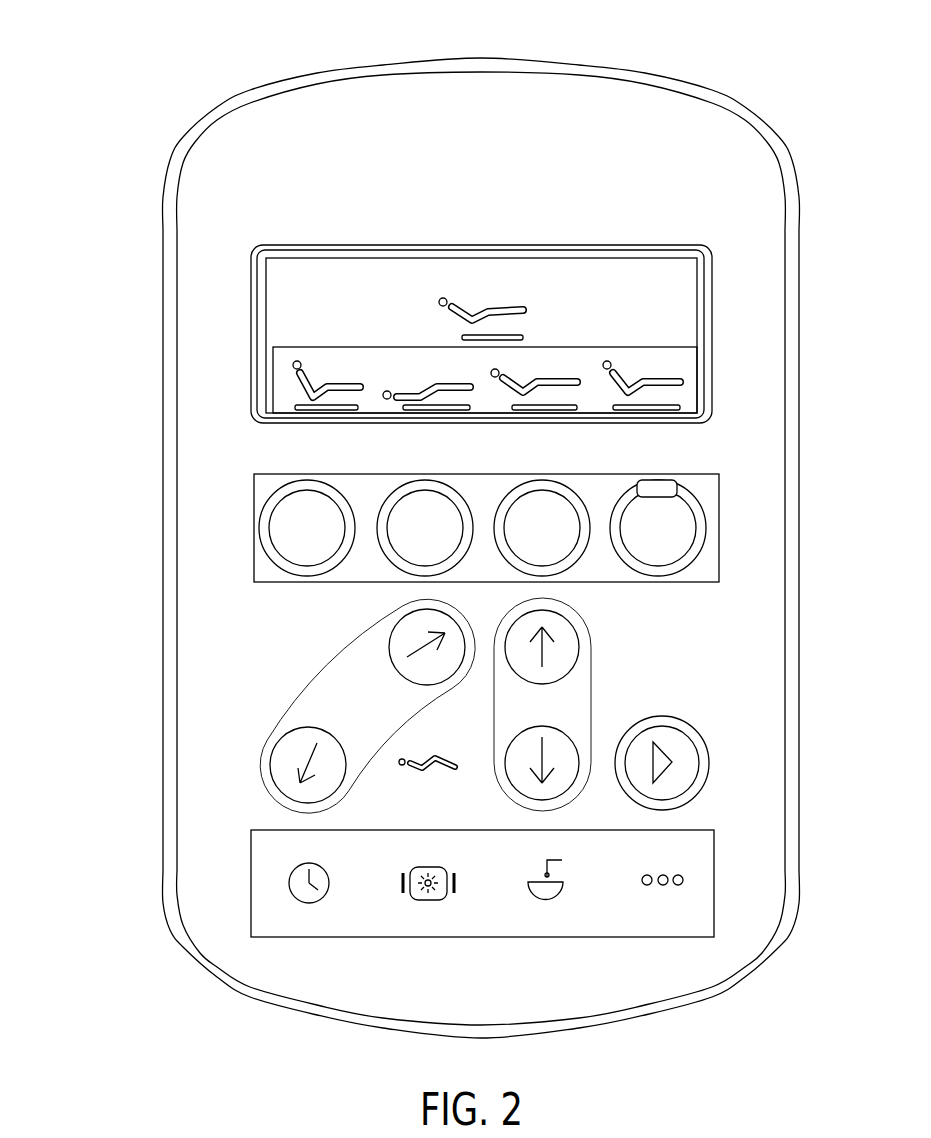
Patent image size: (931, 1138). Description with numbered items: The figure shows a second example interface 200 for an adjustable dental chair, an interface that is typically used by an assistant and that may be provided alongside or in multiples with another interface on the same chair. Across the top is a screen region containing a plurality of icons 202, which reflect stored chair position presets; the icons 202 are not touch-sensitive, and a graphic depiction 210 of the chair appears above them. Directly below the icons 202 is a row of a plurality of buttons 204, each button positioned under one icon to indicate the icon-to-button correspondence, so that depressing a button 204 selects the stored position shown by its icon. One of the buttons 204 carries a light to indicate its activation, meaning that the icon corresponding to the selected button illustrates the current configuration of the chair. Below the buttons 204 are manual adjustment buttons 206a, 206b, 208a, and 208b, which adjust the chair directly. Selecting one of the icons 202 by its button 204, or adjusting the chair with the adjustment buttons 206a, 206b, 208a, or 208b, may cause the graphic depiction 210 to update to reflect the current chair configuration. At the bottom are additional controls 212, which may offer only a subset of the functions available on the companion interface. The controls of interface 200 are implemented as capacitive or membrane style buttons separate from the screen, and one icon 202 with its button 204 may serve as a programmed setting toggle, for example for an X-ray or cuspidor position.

The second example interface 200 is at (132, 86).
The plurality of icons 202 is at (252, 383).
The plurality of buttons 204 is at (254, 528).
The adjustment button 206a is at (398, 648).
The adjustment button 206b is at (283, 750).
The adjustment button 208a is at (573, 650).
The adjustment button 208b is at (543, 737).
The graphic depiction 210 is at (436, 285).
The additional controls 212 is at (251, 884).